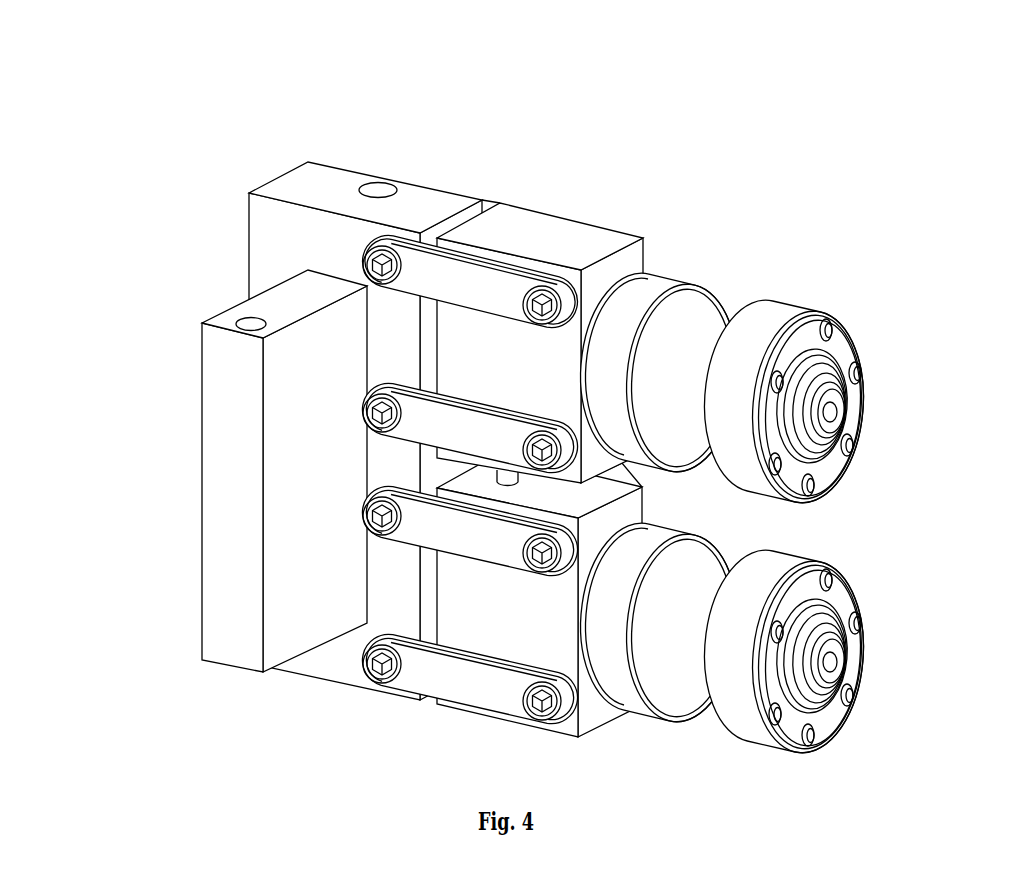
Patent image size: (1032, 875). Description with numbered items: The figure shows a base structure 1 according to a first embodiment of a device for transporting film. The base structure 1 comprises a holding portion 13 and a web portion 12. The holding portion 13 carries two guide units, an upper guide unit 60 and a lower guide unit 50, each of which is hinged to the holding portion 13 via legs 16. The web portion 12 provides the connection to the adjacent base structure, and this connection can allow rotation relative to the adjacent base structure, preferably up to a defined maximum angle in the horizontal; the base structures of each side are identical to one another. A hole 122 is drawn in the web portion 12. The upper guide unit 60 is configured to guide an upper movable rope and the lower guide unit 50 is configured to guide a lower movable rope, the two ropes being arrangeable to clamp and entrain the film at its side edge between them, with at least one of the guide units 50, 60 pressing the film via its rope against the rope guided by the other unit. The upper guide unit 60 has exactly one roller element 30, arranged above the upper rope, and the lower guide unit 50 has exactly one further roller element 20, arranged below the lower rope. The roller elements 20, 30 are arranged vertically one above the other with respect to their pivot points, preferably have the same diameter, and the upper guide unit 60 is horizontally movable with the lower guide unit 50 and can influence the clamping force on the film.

The base structure 1 is at (242, 112).
The web portion 12 is at (238, 633).
The mounting hole 122 is at (240, 331).
The holding portion 13 is at (287, 218).
The legs 16 is at (425, 430).
The further roller element 20 is at (693, 563).
The roller element 30 is at (720, 318).
The lower guide unit 50 is at (510, 633).
The upper guide unit 60 is at (520, 220).